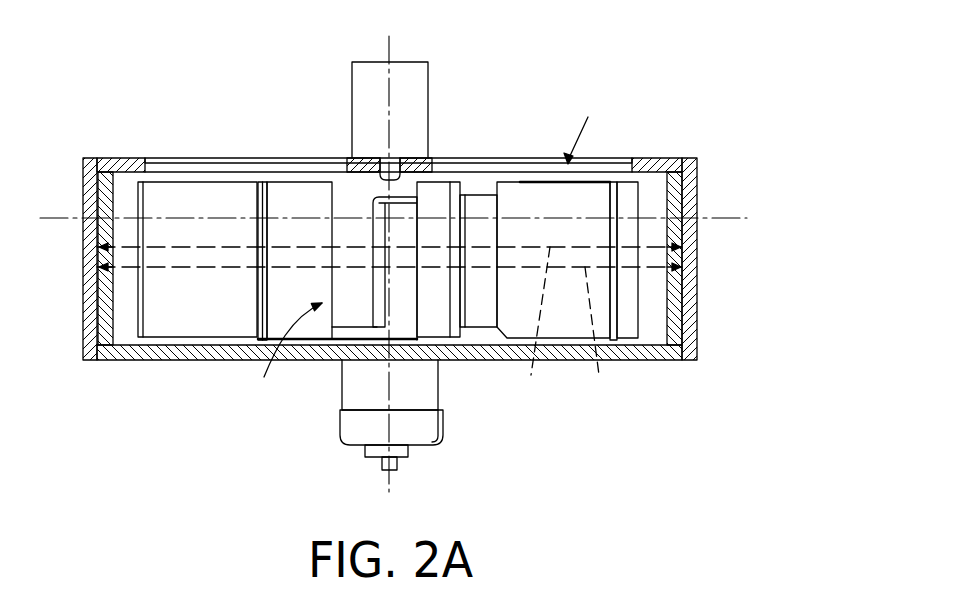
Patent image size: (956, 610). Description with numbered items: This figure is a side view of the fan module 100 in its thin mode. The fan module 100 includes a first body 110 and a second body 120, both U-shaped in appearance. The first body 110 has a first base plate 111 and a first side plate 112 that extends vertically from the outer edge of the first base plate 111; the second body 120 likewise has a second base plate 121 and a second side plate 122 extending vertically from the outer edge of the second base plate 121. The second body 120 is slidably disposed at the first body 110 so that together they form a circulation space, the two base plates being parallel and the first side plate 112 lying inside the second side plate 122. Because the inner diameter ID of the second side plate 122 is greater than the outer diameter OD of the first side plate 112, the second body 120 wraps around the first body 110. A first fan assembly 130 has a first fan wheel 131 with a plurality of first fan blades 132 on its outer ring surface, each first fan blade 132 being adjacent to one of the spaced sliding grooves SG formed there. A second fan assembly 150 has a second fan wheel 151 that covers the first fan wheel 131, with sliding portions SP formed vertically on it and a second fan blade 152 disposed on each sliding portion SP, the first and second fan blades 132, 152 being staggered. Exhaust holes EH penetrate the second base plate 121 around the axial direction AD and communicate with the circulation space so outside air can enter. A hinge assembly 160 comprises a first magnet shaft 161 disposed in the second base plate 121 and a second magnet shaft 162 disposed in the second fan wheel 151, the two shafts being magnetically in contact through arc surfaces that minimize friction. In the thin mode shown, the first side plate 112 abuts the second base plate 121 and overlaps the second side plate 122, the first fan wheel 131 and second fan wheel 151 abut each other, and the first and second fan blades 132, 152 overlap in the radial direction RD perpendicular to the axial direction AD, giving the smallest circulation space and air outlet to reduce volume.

The fan module 100 is at (436, 248).
The first body 110 is at (458, 289).
The first base plate 111 is at (643, 355).
The first side plate 112 is at (682, 330).
The second body 120 is at (458, 238).
The second base plate 121 is at (655, 165).
The second side plate 122 is at (688, 190).
The first fan assembly 130 is at (388, 326).
The first fan wheel 131 is at (387, 293).
The first fan blades 132 is at (218, 318).
The second fan assembly 150 is at (306, 200).
The second fan wheel 151 is at (344, 194).
The second fan blades 152 is at (292, 208).
The hinge assembly 160 is at (468, 199).
The first magnet shaft 161 is at (432, 166).
The second magnet shaft 162 is at (400, 188).
The axial direction AD is at (389, 248).
The radial direction RD is at (410, 220).
The exhaust holes EH is at (584, 125).
The sliding portions SP is at (350, 242).
The sliding grooves SG is at (328, 407).
The inner diameter ID is at (536, 328).
The outer diameter OD is at (598, 338).